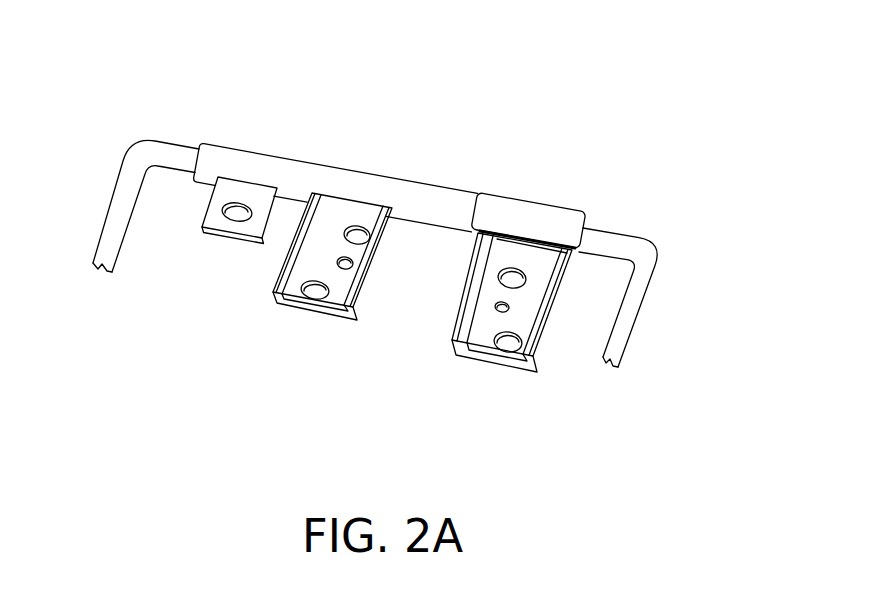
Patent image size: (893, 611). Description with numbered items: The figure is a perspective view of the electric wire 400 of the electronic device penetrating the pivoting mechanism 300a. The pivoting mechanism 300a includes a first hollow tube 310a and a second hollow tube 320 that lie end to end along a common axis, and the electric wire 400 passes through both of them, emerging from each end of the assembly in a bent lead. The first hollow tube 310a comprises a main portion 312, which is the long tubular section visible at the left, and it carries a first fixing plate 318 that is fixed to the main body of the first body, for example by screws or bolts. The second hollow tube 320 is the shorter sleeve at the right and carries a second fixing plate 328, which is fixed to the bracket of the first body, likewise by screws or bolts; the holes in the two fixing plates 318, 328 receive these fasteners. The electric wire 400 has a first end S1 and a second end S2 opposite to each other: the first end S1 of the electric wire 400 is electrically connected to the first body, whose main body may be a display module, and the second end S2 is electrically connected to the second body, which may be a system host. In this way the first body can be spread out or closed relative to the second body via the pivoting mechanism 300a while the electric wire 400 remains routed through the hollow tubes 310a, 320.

The pivoting mechanism 300a is at (400, 261).
The first hollow tube 310a is at (335, 226).
The main portion 312 is at (302, 177).
The first fixing plate 318 is at (293, 295).
The second hollow tube 320 is at (541, 220).
The second fixing plate 328 is at (478, 342).
The electric wire 400 is at (630, 323).
The first end S1 is at (608, 367).
The second end S2 is at (102, 268).